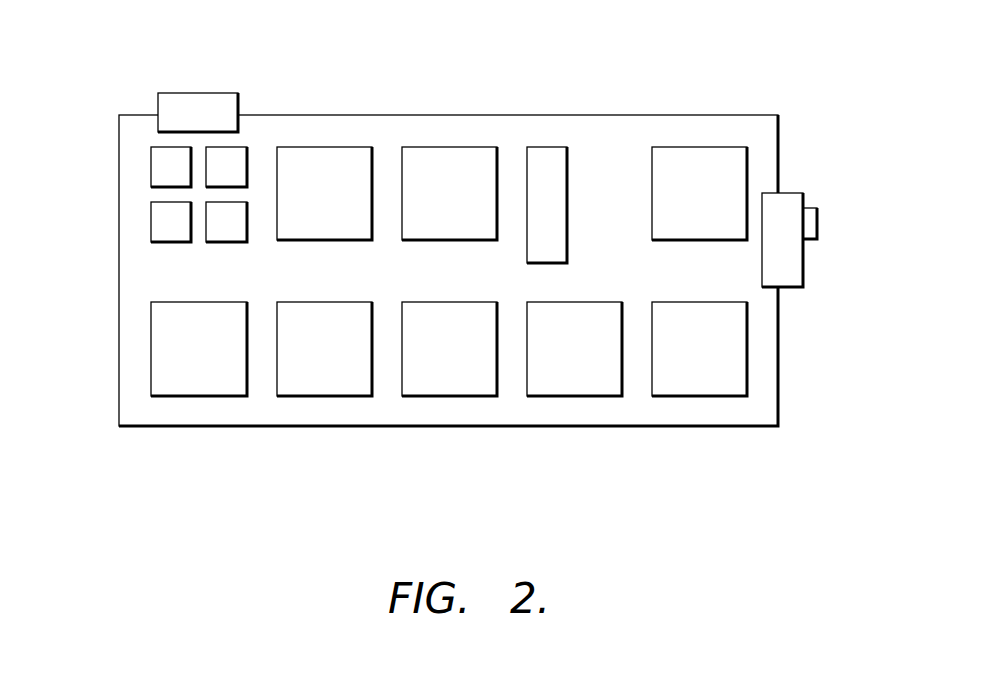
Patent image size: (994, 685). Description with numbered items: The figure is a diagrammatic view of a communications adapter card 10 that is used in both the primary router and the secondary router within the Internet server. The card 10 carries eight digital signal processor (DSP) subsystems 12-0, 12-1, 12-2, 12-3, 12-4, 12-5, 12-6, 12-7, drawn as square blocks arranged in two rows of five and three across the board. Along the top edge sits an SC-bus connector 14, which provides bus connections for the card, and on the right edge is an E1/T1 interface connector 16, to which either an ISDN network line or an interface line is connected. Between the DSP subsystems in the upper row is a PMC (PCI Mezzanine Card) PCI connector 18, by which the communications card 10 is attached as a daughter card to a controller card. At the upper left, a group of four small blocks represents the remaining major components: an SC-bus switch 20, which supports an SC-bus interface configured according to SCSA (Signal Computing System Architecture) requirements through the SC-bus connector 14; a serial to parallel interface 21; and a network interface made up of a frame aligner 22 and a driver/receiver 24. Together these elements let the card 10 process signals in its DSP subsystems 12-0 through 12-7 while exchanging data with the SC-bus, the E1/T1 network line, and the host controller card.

The communications adapter card 10 is at (118, 336).
The digital signal processor (DSP) subsystem 12-0 is at (189, 396).
The digital signal processor (DSP) subsystem 12-1 is at (315, 396).
The digital signal processor (DSP) subsystem 12-2 is at (440, 396).
The digital signal processor (DSP) subsystem 12-3 is at (565, 396).
The digital signal processor (DSP) subsystem 12-4 is at (690, 396).
The digital signal processor (DSP) subsystem 12-5 is at (690, 147).
The digital signal processor (DSP) subsystem 12-6 is at (441, 147).
The digital signal processor (DSP) subsystem 12-7 is at (315, 147).
The SC-bus connector 14 is at (198, 92).
The E1/T1 interface connector 16 is at (803, 262).
The PMC (PCI Mezzanine Card) PCI connector 18 is at (548, 147).
The SC-bus switch 20 is at (151, 175).
The serial to parallel interface 21 is at (247, 158).
The frame aligner 22 is at (151, 230).
The driver/receiver 24 is at (222, 243).